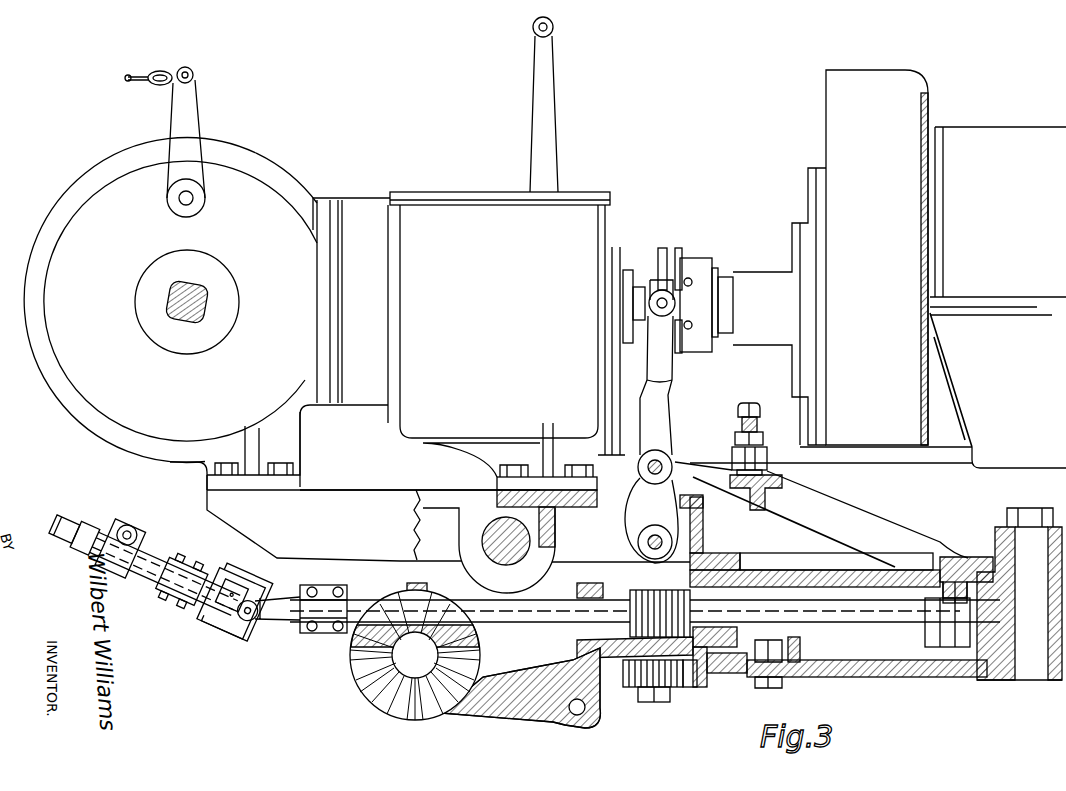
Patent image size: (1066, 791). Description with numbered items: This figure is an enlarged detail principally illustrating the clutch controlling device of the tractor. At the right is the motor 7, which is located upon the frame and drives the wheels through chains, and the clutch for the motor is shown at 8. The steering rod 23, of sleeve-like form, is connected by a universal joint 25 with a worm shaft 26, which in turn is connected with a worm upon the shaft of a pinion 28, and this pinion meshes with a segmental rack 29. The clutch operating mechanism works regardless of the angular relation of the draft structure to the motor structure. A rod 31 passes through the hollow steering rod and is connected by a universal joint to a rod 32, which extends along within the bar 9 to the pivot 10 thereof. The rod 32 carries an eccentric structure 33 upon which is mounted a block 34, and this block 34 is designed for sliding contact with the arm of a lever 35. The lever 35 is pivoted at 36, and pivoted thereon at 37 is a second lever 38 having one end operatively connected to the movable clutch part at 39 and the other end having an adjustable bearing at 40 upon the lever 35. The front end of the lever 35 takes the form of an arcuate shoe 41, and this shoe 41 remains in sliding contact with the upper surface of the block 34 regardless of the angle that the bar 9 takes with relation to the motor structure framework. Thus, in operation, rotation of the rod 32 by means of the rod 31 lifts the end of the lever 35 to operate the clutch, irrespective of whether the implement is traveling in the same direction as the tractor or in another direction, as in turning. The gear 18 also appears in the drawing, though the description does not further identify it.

The motor 7 is at (998, 287).
The clutch 8 is at (698, 272).
The bar 9 is at (547, 683).
The pivot 10 is at (1030, 655).
The gear 18 is at (398, 695).
The steering rod 23 is at (166, 546).
The universal joint 25 is at (217, 616).
The worm shaft 26 is at (617, 623).
The pinion 28 is at (635, 695).
The segmental rack 29 is at (763, 690).
The rod 31 is at (48, 498).
The rod 32 is at (872, 615).
The eccentric structure 33 is at (958, 640).
The block 34 is at (944, 588).
The lever 35 is at (862, 527).
The pivot 36 is at (663, 541).
The pivot 37 is at (664, 458).
The second lever 38 is at (668, 386).
The movable clutch part connection 39 is at (660, 292).
The adjustable bearing 40 is at (770, 460).
The arcuate shoe 41 is at (950, 556).